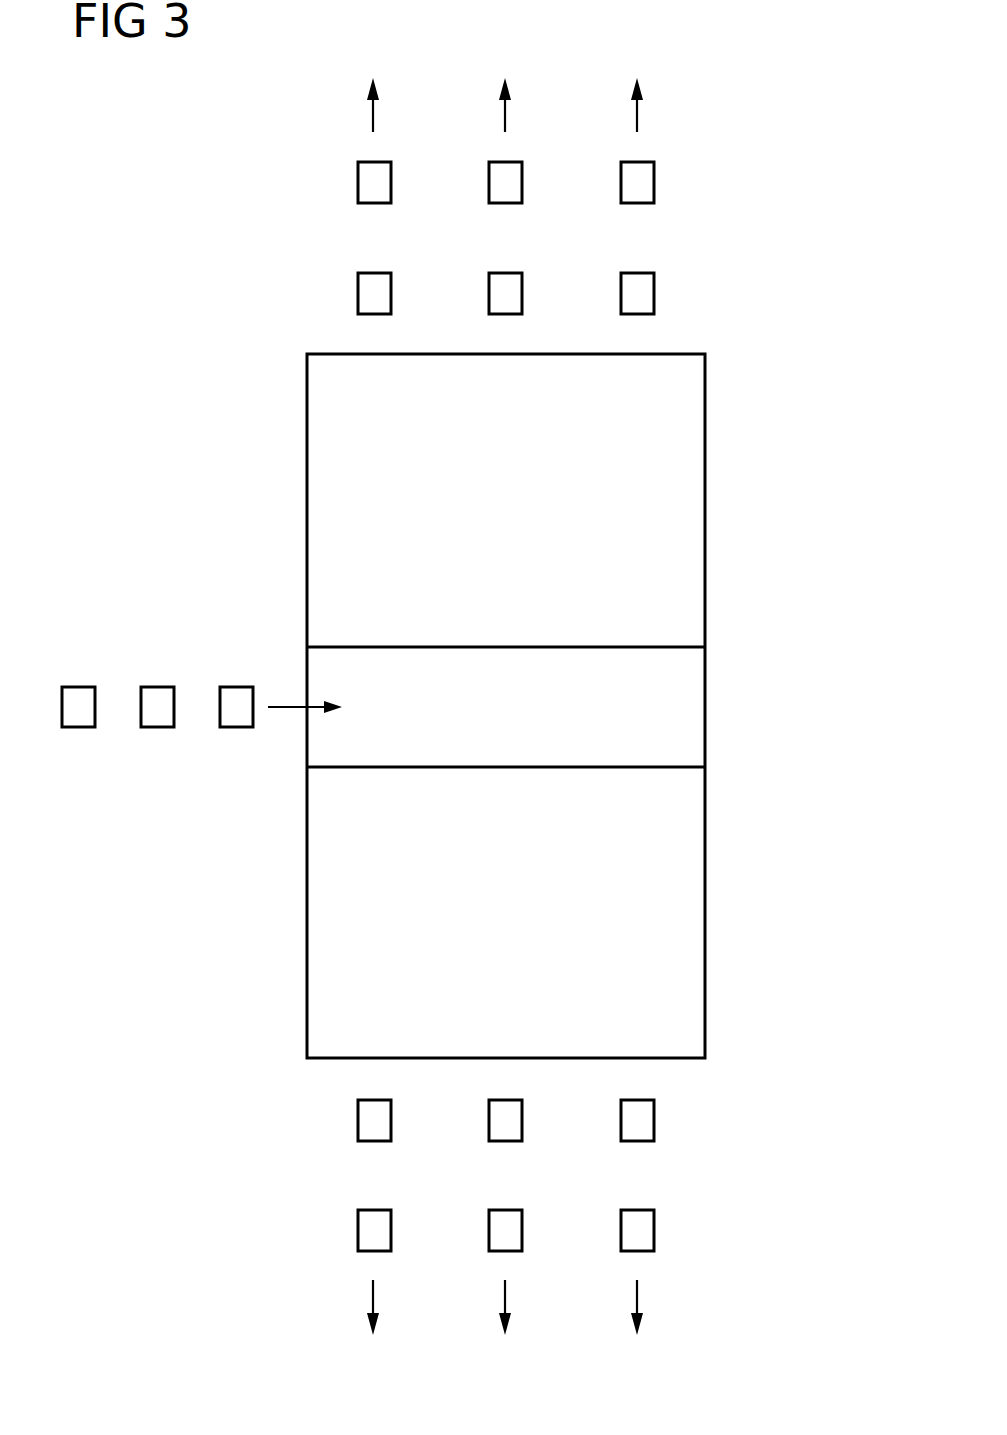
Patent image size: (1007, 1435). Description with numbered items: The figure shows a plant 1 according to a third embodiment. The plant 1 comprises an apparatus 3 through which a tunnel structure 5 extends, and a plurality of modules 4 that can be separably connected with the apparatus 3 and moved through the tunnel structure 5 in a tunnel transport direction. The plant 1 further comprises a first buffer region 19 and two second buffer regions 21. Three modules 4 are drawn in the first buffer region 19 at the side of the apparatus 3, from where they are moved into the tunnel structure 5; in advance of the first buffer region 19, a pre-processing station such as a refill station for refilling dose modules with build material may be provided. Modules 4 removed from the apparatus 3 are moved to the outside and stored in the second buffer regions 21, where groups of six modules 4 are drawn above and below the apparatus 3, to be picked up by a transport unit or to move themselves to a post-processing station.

The plant 1 is at (701, 112).
The apparatus 3 is at (703, 322).
The module 4 is at (393, 706).
The tunnel structure 5 is at (660, 705).
The first buffer region 19 is at (253, 733).
The second buffer region 21 is at (660, 162).